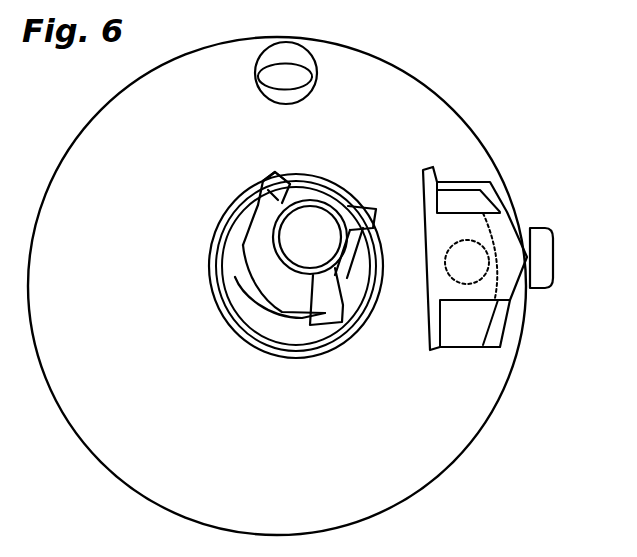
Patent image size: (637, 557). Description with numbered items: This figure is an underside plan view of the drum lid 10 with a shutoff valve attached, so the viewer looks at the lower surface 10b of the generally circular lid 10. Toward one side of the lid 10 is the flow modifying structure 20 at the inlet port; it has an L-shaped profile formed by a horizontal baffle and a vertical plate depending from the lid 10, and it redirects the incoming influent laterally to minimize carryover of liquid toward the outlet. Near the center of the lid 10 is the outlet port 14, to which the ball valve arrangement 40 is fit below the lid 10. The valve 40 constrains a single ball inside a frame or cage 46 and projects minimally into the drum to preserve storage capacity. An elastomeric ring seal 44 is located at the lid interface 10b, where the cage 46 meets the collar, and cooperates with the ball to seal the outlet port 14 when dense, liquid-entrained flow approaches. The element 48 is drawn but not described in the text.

The lid 10 is at (509, 131).
The lower surface of the lid 10b is at (345, 401).
The outlet port 14 is at (242, 167).
The flow modifying structure 20 is at (465, 368).
The ball valve arrangement 40 is at (172, 268).
The ring seal 44 is at (253, 297).
The cage 46 is at (285, 188).
The ring 48 is at (230, 208).